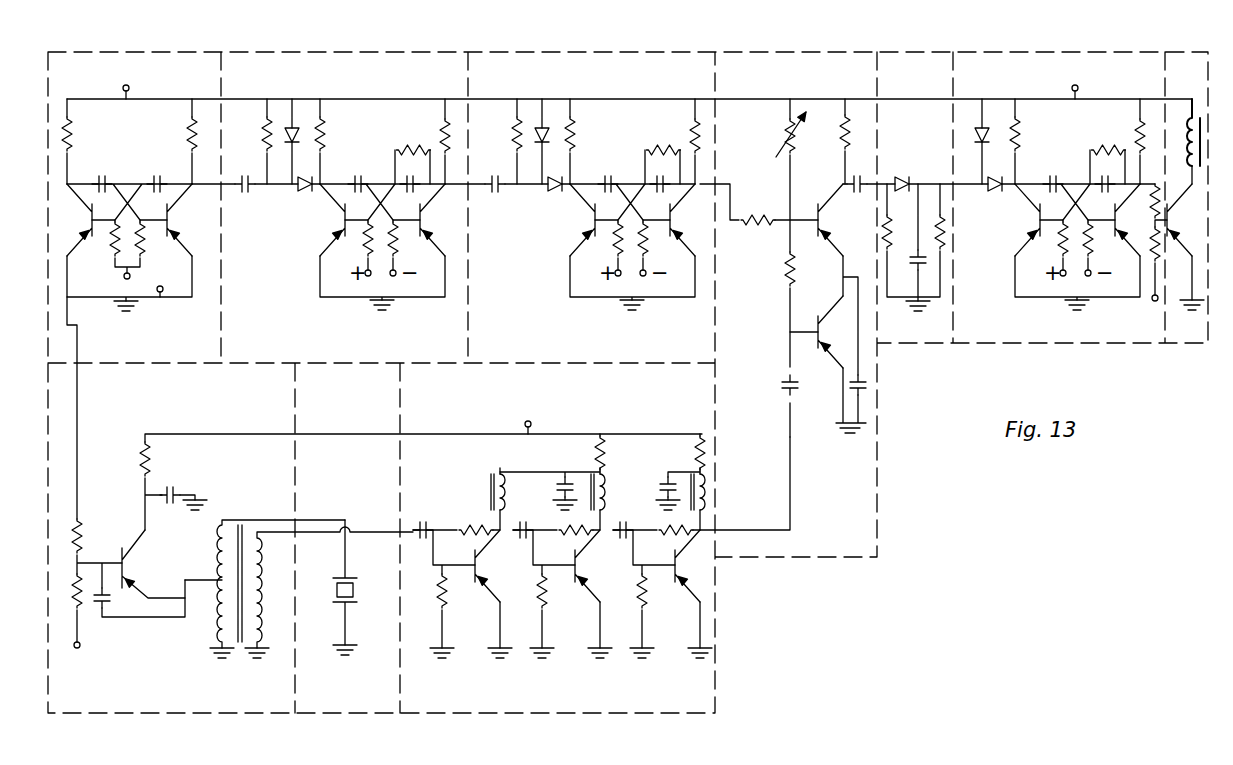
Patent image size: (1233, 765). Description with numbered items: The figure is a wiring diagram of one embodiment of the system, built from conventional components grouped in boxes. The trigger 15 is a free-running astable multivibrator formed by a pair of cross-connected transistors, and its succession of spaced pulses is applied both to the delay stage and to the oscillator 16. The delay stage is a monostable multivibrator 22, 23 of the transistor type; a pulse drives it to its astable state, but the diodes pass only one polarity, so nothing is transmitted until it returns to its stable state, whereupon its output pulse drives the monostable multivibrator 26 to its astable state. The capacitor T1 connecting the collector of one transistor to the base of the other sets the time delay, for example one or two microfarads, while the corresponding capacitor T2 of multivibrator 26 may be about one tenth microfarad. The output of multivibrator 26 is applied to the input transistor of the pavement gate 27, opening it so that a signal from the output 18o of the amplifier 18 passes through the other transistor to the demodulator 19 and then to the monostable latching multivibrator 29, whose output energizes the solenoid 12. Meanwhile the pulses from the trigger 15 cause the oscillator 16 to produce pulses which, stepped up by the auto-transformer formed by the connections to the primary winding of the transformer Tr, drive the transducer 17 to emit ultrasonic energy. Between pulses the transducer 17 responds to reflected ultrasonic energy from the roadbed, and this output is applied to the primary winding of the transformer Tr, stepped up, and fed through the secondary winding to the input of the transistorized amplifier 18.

The trigger 15 is at (160, 62).
The monostable multivibrator 22 is at (320, 62).
The monostable multivibrator 23 is at (321, 169).
The monostable multivibrator 26 is at (580, 62).
The pavement gate 27 is at (757, 62).
The demodulator 19 is at (893, 62).
The monostable latching multivibrator 29 is at (1010, 62).
The solenoid 12 is at (1175, 62).
The oscillator 16 is at (232, 713).
The transducer 17 is at (357, 608).
The amplifier 18 is at (552, 700).
The output of amplifier 18o is at (790, 437).
The capacitor T1 is at (373, 172).
The capacitor T2 is at (623, 172).
The transformer Tr is at (228, 512).